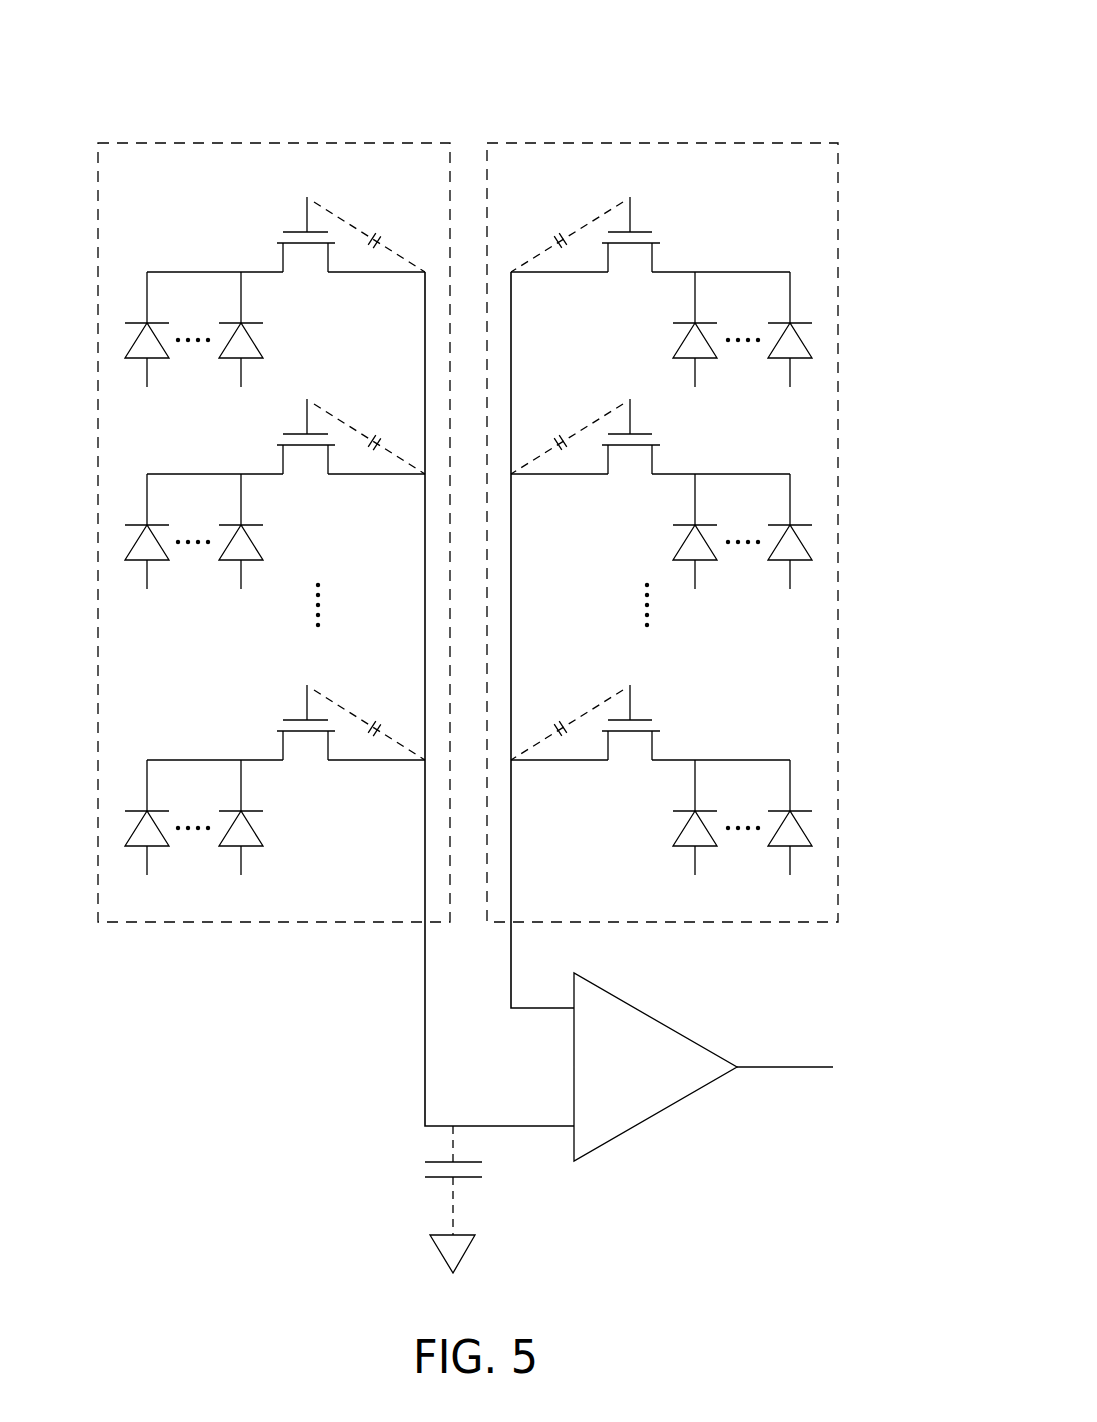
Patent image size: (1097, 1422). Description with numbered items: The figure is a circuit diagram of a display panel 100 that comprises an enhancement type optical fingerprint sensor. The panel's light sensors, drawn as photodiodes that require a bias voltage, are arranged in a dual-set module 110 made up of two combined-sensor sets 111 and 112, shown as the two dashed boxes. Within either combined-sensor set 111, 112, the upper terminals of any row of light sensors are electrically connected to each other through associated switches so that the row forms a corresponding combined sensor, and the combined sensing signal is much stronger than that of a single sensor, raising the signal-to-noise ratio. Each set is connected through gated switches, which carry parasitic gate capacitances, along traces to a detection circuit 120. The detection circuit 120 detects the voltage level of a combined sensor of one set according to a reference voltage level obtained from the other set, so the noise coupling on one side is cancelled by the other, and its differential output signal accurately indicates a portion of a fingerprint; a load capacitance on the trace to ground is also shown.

The display panel 100 is at (724, 92).
The dual-set module 110 is at (552, 102).
The combined-sensor set 111 is at (401, 142).
The combined-sensor set 112 is at (506, 142).
The detection circuit 120 is at (655, 1115).